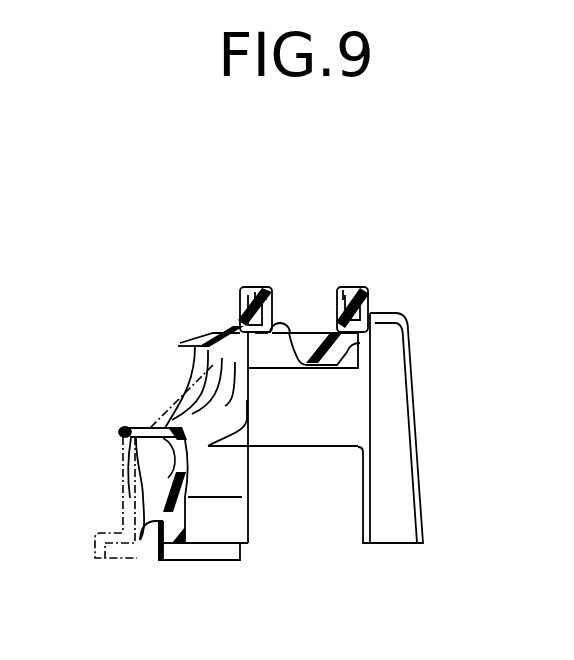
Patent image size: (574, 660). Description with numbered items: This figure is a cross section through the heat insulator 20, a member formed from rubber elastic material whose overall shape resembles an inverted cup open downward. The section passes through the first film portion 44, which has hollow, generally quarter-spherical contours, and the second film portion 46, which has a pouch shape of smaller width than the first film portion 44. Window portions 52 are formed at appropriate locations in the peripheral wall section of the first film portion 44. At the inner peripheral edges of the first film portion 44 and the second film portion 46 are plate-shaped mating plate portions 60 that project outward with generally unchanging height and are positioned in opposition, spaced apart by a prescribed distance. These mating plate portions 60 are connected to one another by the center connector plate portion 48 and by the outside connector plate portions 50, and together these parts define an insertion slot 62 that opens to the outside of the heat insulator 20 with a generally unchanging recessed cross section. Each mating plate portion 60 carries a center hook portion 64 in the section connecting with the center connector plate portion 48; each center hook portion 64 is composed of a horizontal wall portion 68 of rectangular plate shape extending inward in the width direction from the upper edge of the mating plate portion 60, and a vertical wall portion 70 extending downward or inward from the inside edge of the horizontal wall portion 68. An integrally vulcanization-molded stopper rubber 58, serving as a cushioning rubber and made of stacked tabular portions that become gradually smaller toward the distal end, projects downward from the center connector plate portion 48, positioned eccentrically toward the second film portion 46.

The heat insulator 20 is at (106, 246).
The first film portion 44 is at (170, 473).
The second film portion 46 is at (418, 472).
The center connector plate portion 48 is at (310, 326).
The outside connector plate portion 50 is at (305, 420).
The window portion 52 is at (207, 376).
The stopper rubber 58 is at (328, 345).
The mating plate portion 60 is at (240, 304).
The insertion slot 62 is at (261, 335).
The center hook portion 64 is at (274, 222).
The horizontal wall portion 68 is at (255, 292).
The vertical wall portion 70 is at (266, 292).